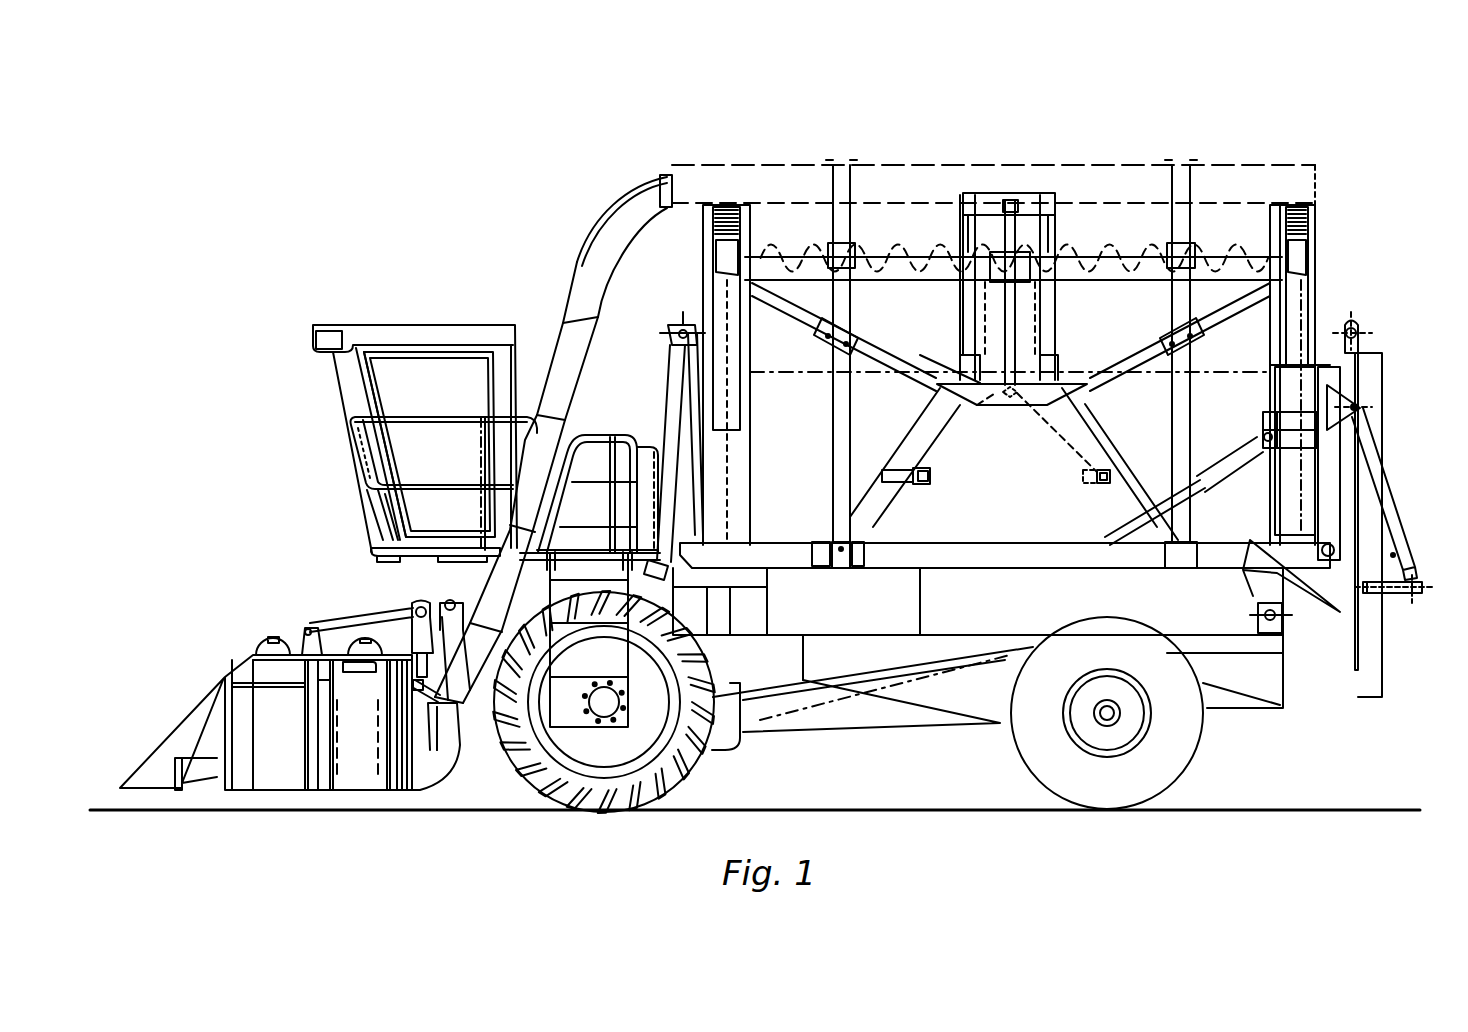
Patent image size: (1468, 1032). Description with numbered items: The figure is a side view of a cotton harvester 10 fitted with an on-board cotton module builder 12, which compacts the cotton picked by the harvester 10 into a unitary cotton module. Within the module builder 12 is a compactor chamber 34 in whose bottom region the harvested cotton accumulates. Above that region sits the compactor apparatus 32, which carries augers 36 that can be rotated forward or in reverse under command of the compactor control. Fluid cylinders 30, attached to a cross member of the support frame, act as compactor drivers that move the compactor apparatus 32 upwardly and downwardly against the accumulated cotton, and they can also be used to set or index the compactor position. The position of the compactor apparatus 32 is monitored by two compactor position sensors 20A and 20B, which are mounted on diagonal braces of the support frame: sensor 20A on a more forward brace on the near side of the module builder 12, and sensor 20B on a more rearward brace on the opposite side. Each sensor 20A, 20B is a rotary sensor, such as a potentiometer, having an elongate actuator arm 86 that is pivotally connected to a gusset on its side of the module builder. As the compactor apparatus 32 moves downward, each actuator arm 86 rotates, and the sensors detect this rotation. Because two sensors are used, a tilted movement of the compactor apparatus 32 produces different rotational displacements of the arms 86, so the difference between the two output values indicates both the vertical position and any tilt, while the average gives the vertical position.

The cotton harvester 10 is at (1375, 130).
The on-board cotton module builder 12 is at (1316, 172).
The compactor position sensor 20A is at (928, 484).
The compactor position sensor 20B is at (1102, 487).
The fluid cylinder 30 is at (1022, 228).
The compactor apparatus 32 is at (1312, 256).
The compactor chamber 34 is at (1250, 333).
The auger 36 is at (1204, 243).
The elongate actuator arm 86 is at (1052, 430).